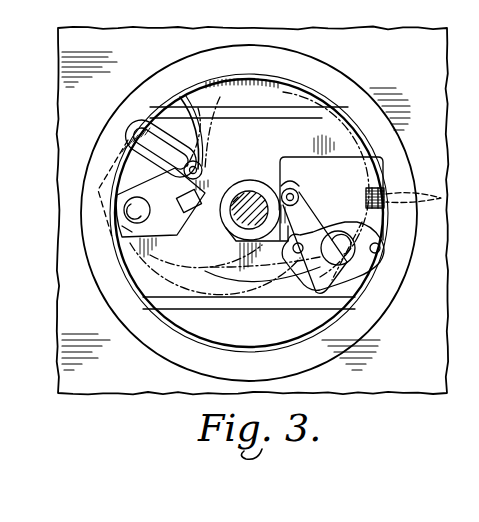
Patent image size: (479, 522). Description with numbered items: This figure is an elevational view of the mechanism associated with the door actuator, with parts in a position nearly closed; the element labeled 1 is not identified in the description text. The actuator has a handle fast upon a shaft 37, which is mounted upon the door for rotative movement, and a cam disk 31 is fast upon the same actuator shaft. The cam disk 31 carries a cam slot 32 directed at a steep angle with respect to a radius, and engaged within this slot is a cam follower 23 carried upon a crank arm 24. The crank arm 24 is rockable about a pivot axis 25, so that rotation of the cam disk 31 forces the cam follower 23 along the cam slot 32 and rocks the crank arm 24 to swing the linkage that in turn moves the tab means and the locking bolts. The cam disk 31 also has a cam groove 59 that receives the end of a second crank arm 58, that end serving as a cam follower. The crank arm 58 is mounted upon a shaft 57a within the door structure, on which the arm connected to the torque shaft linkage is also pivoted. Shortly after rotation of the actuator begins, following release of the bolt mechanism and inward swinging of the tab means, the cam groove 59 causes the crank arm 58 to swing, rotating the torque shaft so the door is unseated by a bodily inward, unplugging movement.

The housing 1 is at (56, 211).
The cam follower 23 is at (202, 173).
The crank arm 24 is at (150, 192).
The pivot axis 25 is at (120, 214).
The cam disk 31 is at (290, 95).
The cam slot 32 is at (216, 130).
The shaft 37 is at (250, 191).
The shaft 57a is at (352, 262).
The crank arm 58 is at (318, 212).
The cam groove 59 is at (207, 288).